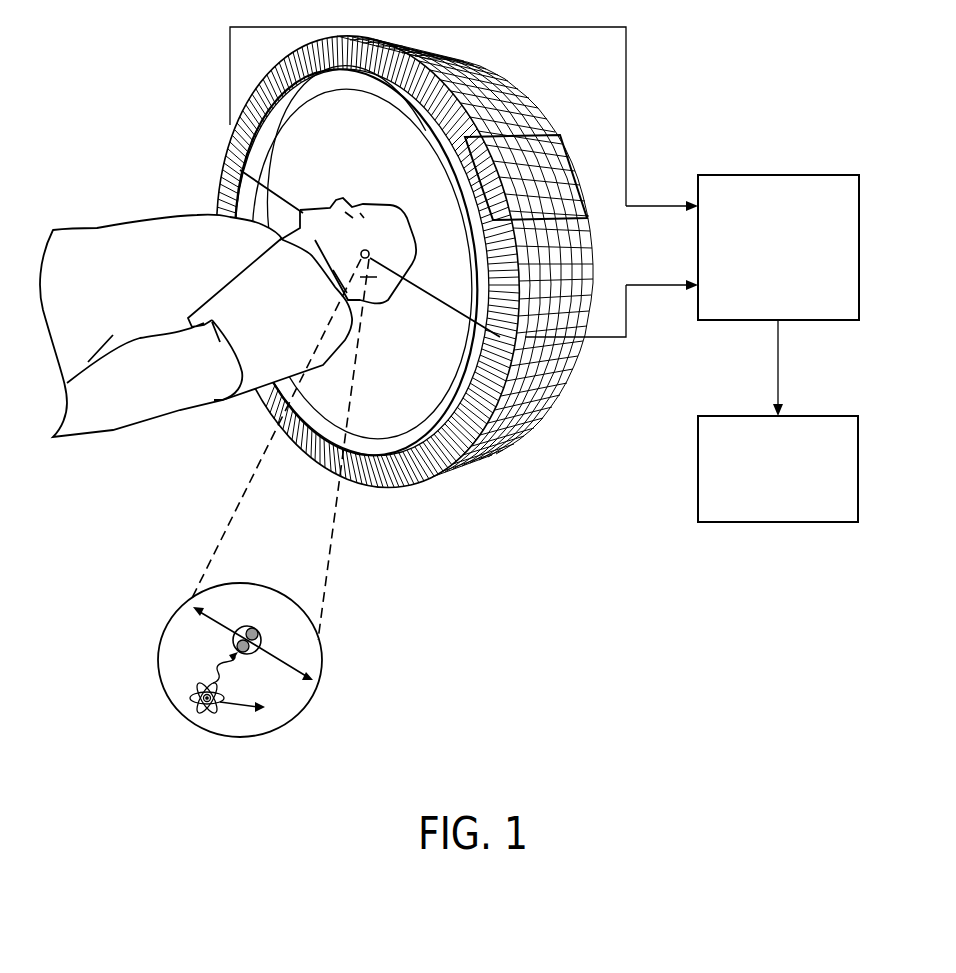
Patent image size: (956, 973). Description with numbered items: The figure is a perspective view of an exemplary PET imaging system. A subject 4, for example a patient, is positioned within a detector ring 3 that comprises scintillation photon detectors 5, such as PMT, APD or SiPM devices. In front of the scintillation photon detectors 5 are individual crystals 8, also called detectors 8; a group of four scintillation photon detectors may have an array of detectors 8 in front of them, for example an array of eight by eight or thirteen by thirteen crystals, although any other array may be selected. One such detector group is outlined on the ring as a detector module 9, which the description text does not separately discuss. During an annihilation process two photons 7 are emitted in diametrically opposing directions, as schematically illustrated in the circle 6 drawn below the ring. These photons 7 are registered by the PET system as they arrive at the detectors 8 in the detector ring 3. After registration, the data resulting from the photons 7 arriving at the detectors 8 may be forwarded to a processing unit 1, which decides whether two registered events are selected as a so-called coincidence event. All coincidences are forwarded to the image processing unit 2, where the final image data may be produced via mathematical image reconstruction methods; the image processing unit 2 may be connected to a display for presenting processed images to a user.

The processing unit 1 is at (818, 175).
The image processing unit 2 is at (818, 416).
The detector ring 3 is at (534, 92).
The subject 4 is at (148, 237).
The scintillation photon detectors 5 is at (505, 433).
The circle 6 is at (250, 737).
The photons 7 is at (188, 603).
The crystals 8 is at (420, 432).
The detector module 9 is at (556, 134).